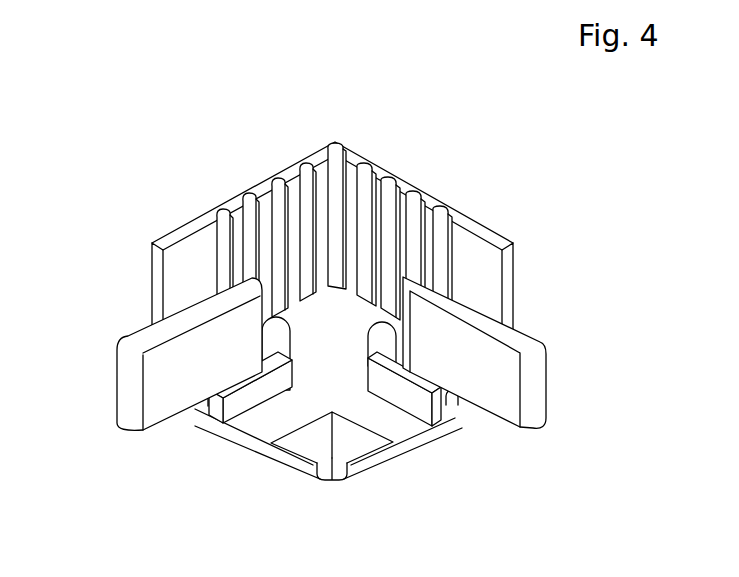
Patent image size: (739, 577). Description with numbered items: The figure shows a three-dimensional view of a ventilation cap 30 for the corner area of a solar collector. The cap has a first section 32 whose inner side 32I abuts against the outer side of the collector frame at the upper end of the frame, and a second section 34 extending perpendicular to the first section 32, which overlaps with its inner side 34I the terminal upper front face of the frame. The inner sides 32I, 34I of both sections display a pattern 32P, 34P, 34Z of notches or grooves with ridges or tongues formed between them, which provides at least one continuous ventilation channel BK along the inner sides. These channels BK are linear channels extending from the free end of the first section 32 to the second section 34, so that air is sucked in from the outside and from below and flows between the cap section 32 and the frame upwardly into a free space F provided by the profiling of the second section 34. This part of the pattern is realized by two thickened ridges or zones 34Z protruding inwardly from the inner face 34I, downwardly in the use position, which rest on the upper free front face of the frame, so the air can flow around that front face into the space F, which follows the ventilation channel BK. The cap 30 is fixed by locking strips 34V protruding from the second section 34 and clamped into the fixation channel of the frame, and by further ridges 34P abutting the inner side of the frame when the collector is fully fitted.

The ventilation cap 30 is at (594, 175).
The first section 32 is at (507, 268).
The inner side of first section 32I is at (471, 256).
The pattern 32P is at (349, 216).
The ventilation channel BK is at (311, 178).
The second section 34 is at (417, 430).
The free space F is at (347, 385).
The thickened ridges 34Z is at (211, 394).
The inner side of second section 34I is at (256, 426).
The further ridges 34P is at (420, 400).
The locking strips 34V is at (143, 345).